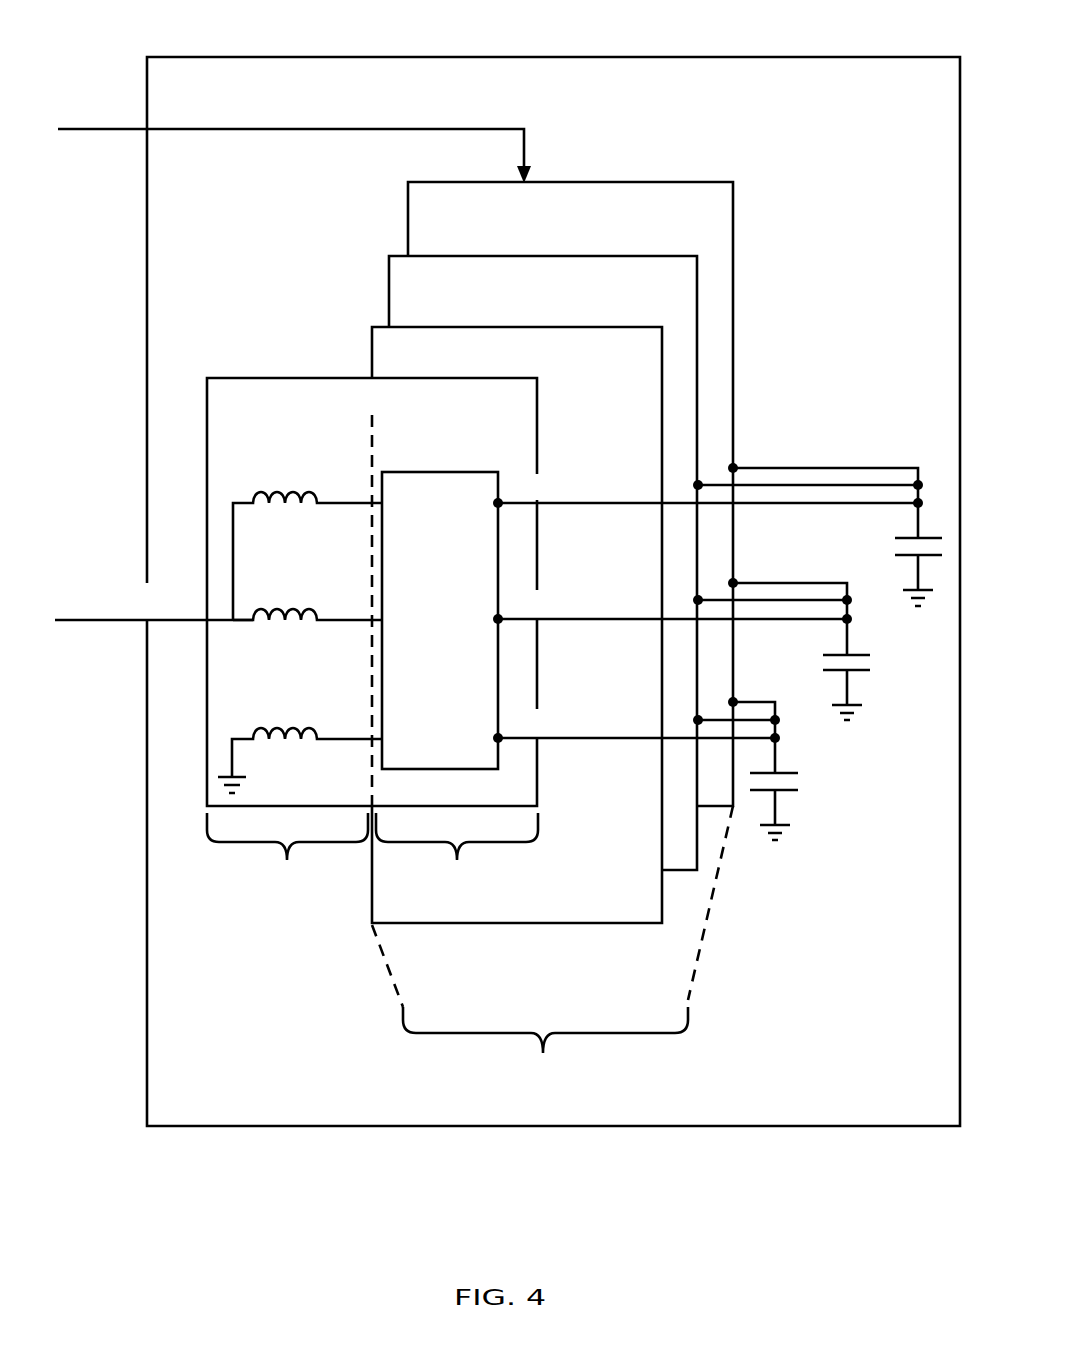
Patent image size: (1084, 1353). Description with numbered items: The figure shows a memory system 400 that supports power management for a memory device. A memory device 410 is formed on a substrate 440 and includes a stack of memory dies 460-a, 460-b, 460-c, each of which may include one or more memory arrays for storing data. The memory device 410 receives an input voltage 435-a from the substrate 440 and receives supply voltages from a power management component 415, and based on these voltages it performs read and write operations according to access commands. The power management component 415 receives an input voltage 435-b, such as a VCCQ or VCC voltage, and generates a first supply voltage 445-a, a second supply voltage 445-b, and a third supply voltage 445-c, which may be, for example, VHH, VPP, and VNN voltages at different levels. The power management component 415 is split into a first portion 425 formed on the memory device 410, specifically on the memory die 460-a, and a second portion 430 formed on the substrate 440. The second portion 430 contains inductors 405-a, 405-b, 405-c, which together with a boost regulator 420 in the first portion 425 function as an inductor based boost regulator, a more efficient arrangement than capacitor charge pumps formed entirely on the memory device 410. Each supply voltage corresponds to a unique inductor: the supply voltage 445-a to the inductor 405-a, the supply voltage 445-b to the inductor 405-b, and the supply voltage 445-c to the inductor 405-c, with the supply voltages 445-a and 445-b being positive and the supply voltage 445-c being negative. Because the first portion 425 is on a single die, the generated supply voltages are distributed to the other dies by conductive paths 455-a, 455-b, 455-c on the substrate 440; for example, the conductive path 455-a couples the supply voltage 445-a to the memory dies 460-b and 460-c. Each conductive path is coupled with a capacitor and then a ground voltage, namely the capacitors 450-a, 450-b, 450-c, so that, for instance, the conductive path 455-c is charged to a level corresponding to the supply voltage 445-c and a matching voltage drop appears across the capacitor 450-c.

The memory system 400 is at (758, 1205).
The inductor 405-a is at (287, 489).
The inductor 405-b is at (287, 605).
The inductor 405-c is at (287, 724).
The memory device 410 is at (552, 945).
The power management component 415 is at (258, 378).
The boost regulator 420 is at (437, 472).
The first portion 425 is at (457, 864).
The second portion 430 is at (287, 864).
The input voltage 435-a is at (108, 130).
The input voltage 435-b is at (108, 620).
The substrate 440 is at (553, 57).
The supply voltage 445-a is at (615, 506).
The supply voltage 445-b is at (615, 622).
The supply voltage 445-c is at (615, 741).
The capacitor 450-a is at (903, 547).
The capacitor 450-b is at (867, 660).
The capacitor 450-c is at (797, 780).
The conductive path 455-a is at (738, 468).
The conductive path 455-b is at (738, 583).
The conductive path 455-c is at (738, 702).
The memory die 460-a is at (430, 327).
The memory die 460-b is at (530, 256).
The memory die 460-c is at (662, 182).